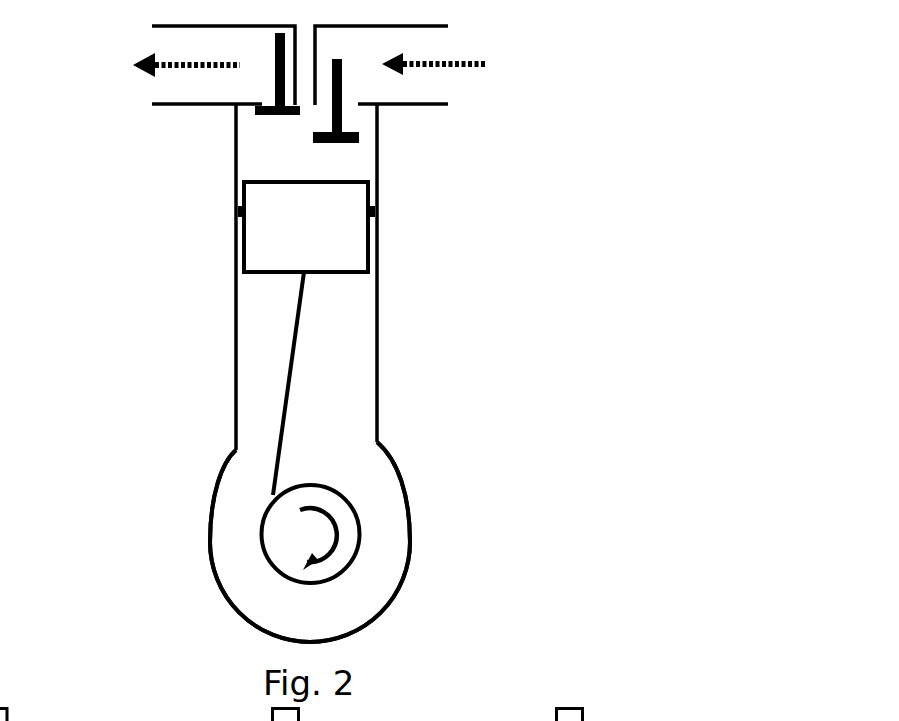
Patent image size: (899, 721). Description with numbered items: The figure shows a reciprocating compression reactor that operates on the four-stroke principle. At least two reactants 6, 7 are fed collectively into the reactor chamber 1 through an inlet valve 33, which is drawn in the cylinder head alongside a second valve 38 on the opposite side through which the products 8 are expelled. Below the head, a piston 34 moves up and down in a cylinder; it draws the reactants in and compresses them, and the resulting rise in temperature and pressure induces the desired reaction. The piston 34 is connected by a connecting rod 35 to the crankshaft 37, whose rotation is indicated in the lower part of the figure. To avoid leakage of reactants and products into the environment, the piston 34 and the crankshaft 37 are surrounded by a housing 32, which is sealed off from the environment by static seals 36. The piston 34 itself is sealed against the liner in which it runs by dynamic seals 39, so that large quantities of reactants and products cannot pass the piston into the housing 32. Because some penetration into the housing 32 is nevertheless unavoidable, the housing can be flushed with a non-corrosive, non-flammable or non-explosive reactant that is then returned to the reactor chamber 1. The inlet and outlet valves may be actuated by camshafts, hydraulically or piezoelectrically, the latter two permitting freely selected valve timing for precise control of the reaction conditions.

The reactor chamber 1 is at (280, 155).
The reactant 6 is at (471, 61).
The reactant 7 is at (471, 61).
The products 8 is at (151, 65).
The housing 32 is at (305, 463).
The inlet valve 33 is at (358, 137).
The piston 34 is at (306, 238).
The connecting rod 35 is at (296, 345).
The static seals 36 is at (382, 438).
The crankshaft 37 is at (312, 530).
The exhaust valve 38 is at (276, 114).
The dynamic seals 39 is at (240, 215).